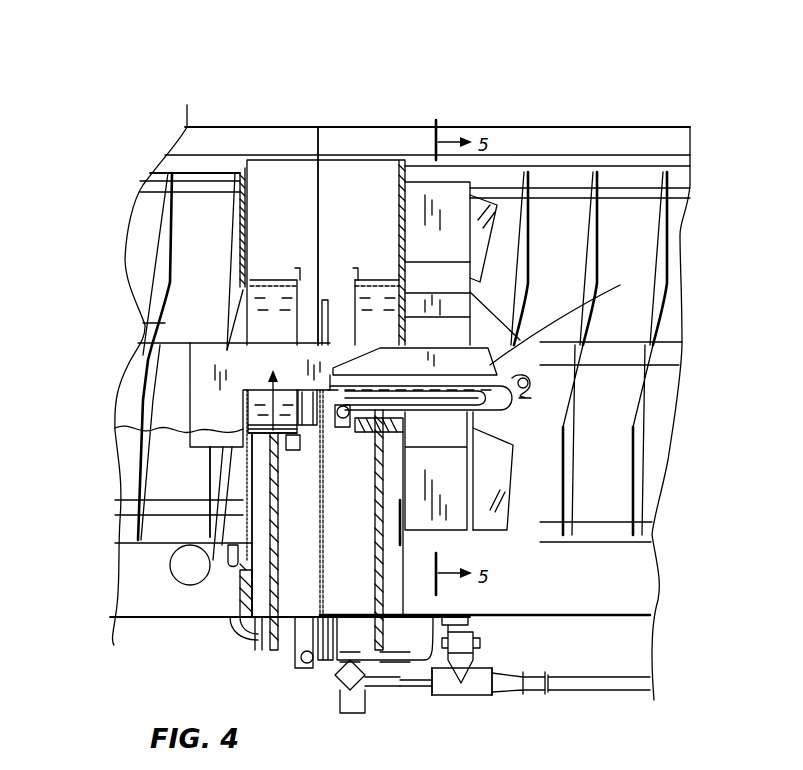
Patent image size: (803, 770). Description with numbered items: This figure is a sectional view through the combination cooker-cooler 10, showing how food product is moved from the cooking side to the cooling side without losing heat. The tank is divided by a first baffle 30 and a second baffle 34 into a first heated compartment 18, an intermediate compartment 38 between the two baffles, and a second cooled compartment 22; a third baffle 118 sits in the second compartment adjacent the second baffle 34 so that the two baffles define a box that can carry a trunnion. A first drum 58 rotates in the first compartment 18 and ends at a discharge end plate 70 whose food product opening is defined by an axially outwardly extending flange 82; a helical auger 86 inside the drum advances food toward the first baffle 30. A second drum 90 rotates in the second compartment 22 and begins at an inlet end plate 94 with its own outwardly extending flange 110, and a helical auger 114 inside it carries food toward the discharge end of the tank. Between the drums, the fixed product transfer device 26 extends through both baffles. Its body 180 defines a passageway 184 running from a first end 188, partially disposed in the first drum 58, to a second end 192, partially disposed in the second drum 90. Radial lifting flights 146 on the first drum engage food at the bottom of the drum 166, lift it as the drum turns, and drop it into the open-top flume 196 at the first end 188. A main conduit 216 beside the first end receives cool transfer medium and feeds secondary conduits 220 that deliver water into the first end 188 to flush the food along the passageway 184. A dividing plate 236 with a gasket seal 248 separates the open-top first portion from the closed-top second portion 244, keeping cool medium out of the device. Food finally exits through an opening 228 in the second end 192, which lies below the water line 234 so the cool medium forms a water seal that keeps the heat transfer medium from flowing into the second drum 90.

The combination cooker-cooler 10 is at (192, 82).
The second drum 90 is at (196, 165).
The inlet end plate 94 is at (247, 170).
The second cooled compartment 22 is at (280, 165).
The gasket seal 248 is at (348, 270).
The first heated compartment 18 is at (370, 165).
The discharge end plate 70 is at (399, 160).
The radial lifting flights 146 is at (421, 185).
The first drum 58 is at (524, 165).
The axially outwardly extending flange 110 is at (262, 285).
The body 180 is at (298, 305).
The passageway 184 is at (350, 295).
The axially outwardly extending flange 82 is at (358, 292).
The helical auger 114 is at (160, 270).
The second portion 244 is at (243, 287).
The second end 192 is at (200, 365).
The water line 234 is at (172, 420).
The flume 196 is at (443, 347).
The first end 188 is at (510, 375).
The helical auger 86 is at (665, 275).
The bottom of the drum 166 is at (622, 468).
The main conduit 216 is at (540, 394).
The product transfer device 26 is at (276, 436).
The secondary conduits 220 is at (502, 428).
The dividing plate 236 is at (353, 437).
The intermediate compartment 38 is at (356, 600).
The first baffle 30 is at (380, 606).
The second baffle 34 is at (278, 592).
The third baffle 118 is at (240, 595).
The opening 228 is at (222, 555).